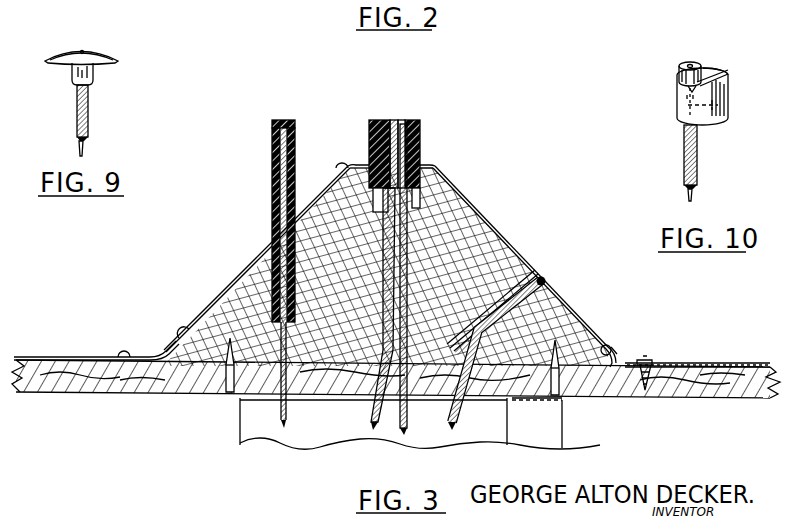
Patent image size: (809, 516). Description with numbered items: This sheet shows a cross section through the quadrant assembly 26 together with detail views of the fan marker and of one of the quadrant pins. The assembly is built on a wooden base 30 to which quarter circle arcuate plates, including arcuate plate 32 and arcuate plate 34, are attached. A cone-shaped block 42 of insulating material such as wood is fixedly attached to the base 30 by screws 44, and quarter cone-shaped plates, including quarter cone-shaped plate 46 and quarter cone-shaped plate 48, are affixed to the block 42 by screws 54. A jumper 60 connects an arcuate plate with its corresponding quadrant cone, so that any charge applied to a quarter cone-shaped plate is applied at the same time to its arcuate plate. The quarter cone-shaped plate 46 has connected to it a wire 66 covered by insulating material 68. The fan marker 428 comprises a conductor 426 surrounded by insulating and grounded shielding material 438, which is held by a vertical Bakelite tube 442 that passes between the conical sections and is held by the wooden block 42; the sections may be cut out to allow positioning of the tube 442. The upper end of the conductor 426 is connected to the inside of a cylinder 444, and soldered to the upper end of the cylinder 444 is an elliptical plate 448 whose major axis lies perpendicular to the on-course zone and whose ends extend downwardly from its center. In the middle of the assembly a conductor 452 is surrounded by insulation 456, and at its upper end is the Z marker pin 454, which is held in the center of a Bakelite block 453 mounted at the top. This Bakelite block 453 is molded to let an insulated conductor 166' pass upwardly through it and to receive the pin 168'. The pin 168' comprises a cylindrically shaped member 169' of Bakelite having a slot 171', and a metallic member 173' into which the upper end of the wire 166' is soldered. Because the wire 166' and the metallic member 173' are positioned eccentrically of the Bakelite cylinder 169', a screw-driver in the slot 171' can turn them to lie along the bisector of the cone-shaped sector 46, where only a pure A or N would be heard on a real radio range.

In FIG. 3, the quadrant assembly 26 is at (472, 193).
In FIG. 3, the wooden base 30 is at (88, 371).
In FIG. 3, the arcuate plate 32 is at (693, 363).
In FIG. 3, the arcuate plate 34 is at (48, 357).
In FIG. 3, the cone-shaped block 42 is at (520, 262).
In FIG. 3, the screws 44 is at (228, 396).
In FIG. 3, the quarter cone-shaped plate 46 is at (496, 233).
In FIG. 3, the quarter cone-shaped plate 48 is at (226, 284).
In FIG. 3, the screws 54 is at (609, 345).
In FIG. 3, the jumper 60 is at (166, 350).
In FIG. 3, the wire 66 is at (546, 283).
In FIG. 3, the insulating material 68 is at (540, 269).
In FIG. 3, the insulated conductor 166' is at (423, 300).
In FIG. 10, the insulated conductor 166' is at (718, 120).
In FIG. 3, the pin 168' is at (423, 158).
In FIG. 10, the pin 168' is at (717, 74).
In FIG. 10, the cylindrically shaped member 169' is at (736, 98).
In FIG. 10, the slot 171' is at (732, 69).
In FIG. 10, the metallic member 173' is at (666, 55).
In FIG. 3, the conductor 426 is at (283, 430).
In FIG. 9, the conductor 426 is at (83, 50).
In FIG. 3, the fan marker 428 is at (292, 122).
In FIG. 9, the fan marker 428 is at (50, 48).
In FIG. 3, the insulating and grounded shielding material 438 is at (279, 400).
In FIG. 9, the insulating and grounded shielding material 438 is at (76, 111).
In FIG. 3, the Bakelite tube 442 is at (293, 158).
In FIG. 3, the cylinder 444 is at (293, 129).
In FIG. 9, the cylinder 444 is at (93, 76).
In FIG. 3, the plate 448 is at (276, 121).
In FIG. 9, the plate 448 is at (110, 50).
In FIG. 3, the conductor 452 is at (373, 425).
In FIG. 3, the Bakelite block 453 is at (422, 160).
In FIG. 3, the Z marker pin 454 is at (393, 121).
In FIG. 3, the insulation 456 is at (372, 412).